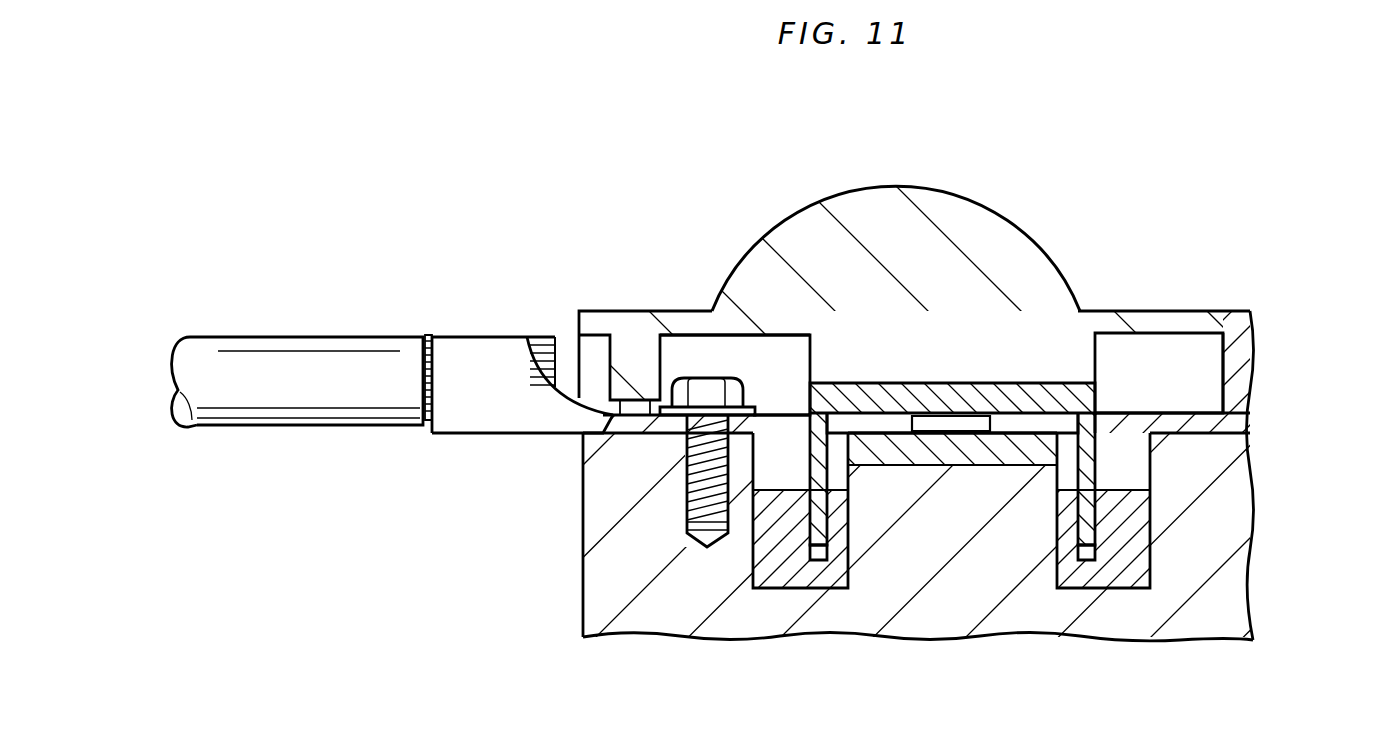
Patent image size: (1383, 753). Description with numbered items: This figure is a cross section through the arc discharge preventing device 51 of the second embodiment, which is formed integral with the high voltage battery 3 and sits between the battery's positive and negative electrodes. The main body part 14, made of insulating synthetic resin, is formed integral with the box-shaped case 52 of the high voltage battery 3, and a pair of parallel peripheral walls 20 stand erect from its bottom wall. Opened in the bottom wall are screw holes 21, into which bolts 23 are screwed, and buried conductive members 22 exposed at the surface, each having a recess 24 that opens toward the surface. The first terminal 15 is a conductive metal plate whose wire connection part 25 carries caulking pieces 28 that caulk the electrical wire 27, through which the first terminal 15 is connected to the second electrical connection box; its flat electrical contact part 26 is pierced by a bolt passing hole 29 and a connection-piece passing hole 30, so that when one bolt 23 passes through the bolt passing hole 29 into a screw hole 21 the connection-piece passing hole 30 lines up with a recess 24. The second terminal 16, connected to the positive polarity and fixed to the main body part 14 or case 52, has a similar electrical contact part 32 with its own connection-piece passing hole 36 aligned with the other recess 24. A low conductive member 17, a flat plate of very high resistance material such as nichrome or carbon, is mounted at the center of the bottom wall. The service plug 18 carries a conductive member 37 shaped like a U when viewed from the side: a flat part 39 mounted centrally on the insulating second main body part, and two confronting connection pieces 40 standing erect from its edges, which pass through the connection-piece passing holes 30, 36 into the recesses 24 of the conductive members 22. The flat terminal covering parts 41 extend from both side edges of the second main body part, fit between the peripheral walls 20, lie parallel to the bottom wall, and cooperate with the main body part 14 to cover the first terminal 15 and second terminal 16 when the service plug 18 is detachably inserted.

The high voltage battery 3 is at (1256, 462).
The main body part 14 is at (583, 488).
The first terminal 15 is at (498, 337).
The second terminal 16 is at (1147, 410).
The low conductive member 17 is at (968, 448).
The service plug 18 is at (948, 188).
The peripheral walls 20 is at (695, 348).
The screw holes 21 is at (713, 520).
The conductive members 22 is at (770, 575).
The bolts 23 is at (728, 377).
The recesses 24 is at (812, 570).
The wire connection part 25 is at (447, 437).
The electrical contact part 26 is at (778, 412).
The electrical wire 27 is at (322, 425).
The caulking pieces 28 is at (445, 337).
The bolt passing hole 29 is at (693, 450).
The connection-piece passing hole 30 is at (840, 456).
The electrical contact part 32 is at (1190, 427).
The connection-piece passing hole 36 is at (1097, 452).
The conductive member 37 is at (1013, 383).
The flat part 39 is at (1007, 425).
The connection pieces 40 is at (840, 525).
The terminal covering parts 41 is at (608, 318).
The arc discharge preventing device 51 is at (1048, 253).
The case 52 is at (1225, 622).